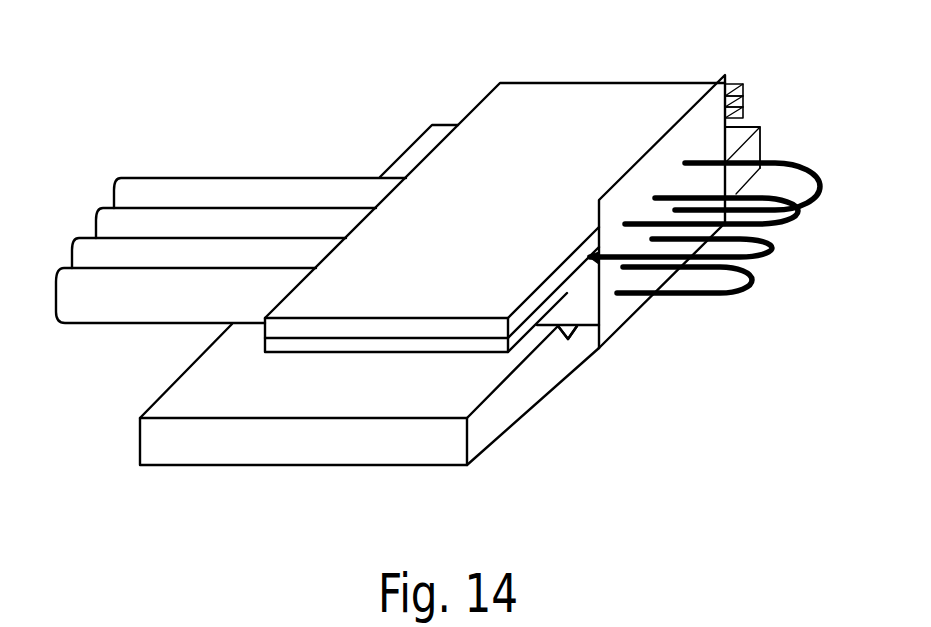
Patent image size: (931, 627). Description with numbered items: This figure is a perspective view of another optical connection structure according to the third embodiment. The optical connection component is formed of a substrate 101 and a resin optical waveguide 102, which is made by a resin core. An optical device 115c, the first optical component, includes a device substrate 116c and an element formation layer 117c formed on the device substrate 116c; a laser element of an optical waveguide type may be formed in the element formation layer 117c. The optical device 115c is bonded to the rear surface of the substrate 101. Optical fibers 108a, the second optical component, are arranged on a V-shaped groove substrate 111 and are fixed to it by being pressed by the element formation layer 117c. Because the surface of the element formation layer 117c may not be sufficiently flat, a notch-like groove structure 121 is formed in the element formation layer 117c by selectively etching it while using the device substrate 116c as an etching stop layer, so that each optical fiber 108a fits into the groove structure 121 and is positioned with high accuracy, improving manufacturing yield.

The optical fiber 108a is at (135, 177).
The optical device 115c is at (578, 66).
The device substrate 116c is at (744, 90).
The element formation layer 117c is at (744, 108).
The substrate 101 is at (718, 132).
The resin optical waveguide 102 is at (822, 189).
The V-shaped groove substrate 111 is at (322, 466).
The groove structure 121 is at (577, 282).